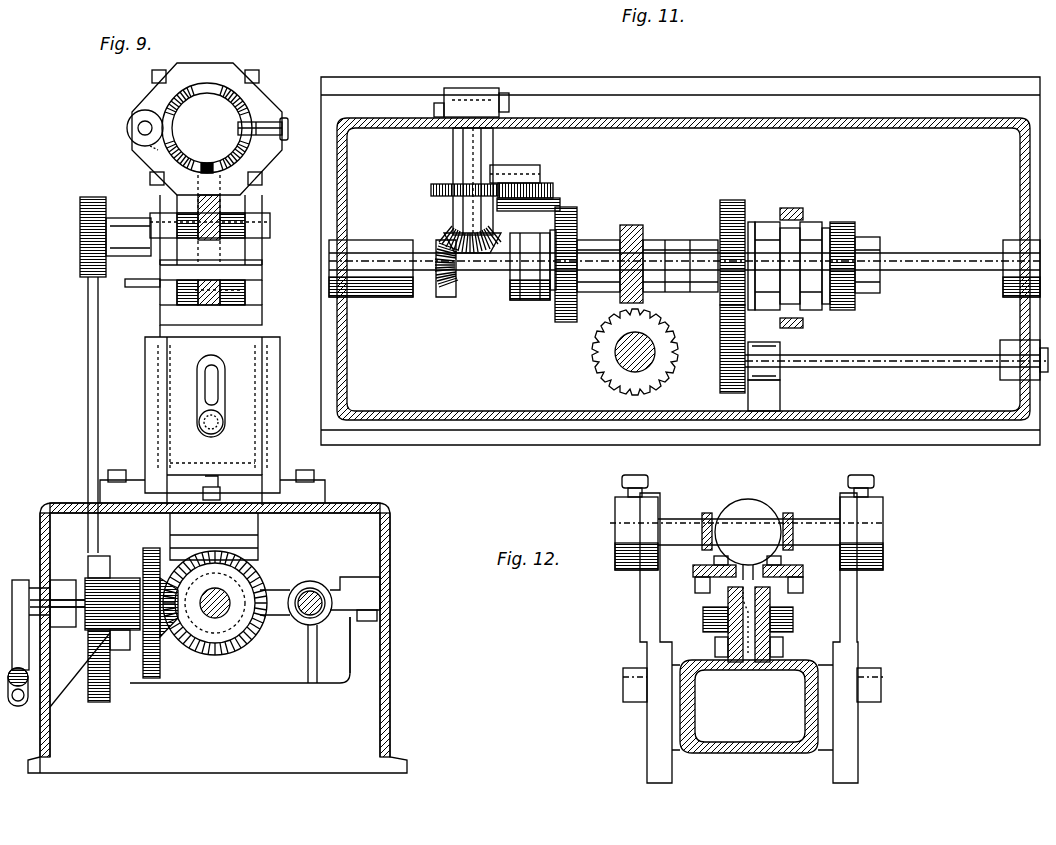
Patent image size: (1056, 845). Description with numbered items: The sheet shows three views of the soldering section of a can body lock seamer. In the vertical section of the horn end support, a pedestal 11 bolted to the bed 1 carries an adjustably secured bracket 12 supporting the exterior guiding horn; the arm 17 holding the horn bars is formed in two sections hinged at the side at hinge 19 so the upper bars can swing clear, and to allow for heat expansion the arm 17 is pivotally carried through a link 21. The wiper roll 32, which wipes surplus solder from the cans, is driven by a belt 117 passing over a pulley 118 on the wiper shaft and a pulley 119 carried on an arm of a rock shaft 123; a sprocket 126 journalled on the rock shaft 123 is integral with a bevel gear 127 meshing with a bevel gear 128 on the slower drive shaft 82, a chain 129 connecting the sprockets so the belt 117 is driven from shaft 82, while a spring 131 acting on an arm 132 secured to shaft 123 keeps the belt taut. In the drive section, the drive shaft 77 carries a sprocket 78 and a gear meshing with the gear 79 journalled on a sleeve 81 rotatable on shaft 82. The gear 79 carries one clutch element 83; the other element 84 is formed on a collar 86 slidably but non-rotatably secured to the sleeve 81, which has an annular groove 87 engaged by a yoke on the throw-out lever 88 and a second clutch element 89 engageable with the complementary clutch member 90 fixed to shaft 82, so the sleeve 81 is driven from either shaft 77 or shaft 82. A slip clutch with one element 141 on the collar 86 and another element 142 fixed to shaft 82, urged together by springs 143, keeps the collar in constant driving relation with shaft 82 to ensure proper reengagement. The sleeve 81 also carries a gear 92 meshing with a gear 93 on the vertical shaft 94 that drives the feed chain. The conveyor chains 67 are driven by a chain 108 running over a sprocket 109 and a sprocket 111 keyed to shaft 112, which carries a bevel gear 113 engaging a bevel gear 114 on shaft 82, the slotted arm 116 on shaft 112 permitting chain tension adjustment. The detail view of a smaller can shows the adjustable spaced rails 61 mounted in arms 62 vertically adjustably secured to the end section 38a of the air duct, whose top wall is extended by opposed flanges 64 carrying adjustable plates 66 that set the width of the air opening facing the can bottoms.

In FIG. 9, the frame or bed 1 is at (370, 504).
In FIG. 9, the pedestal 11 is at (270, 415).
In FIG. 9, the bracket 12 is at (262, 312).
In FIG. 9, the arm 17 is at (218, 62).
In FIG. 9, the hinge 19 is at (138, 132).
In FIG. 9, the link 21 is at (262, 232).
In FIG. 9, the wiper roll 32 is at (225, 218).
In FIG. 9, the belt 117 is at (88, 362).
In FIG. 9, the pulley 118 is at (80, 246).
In FIG. 9, the pulley 119 is at (110, 578).
In FIG. 9, the rock shaft 123 is at (60, 600).
In FIG. 9, the sprocket 126 is at (152, 678).
In FIG. 9, the bevel gear 127 is at (172, 640).
In FIG. 9, the bevel gear 128 is at (222, 660).
In FIG. 9, the chain 129 is at (148, 668).
In FIG. 9, the spring 131 is at (16, 708).
In FIG. 9, the arm 132 is at (85, 635).
In FIG. 9, the drive shaft 77 is at (300, 622).
In FIG. 11, the drive shaft 77 is at (903, 356).
In FIG. 9, the second drive shaft 82 is at (236, 622).
In FIG. 11, the second drive shaft 82 is at (928, 255).
In FIG. 11, the slotted arm 116 is at (505, 103).
In FIG. 11, the shaft 112 is at (465, 141).
In FIG. 11, the sprocket 111 is at (440, 184).
In FIG. 11, the chain 108 is at (505, 183).
In FIG. 11, the sprocket 109 is at (545, 182).
In FIG. 11, the conveyor chains 67 is at (560, 201).
In FIG. 12, the conveyor chains 67 is at (700, 566).
In FIG. 11, the bevel gear 113 is at (462, 235).
In FIG. 11, the bevel gear 114 is at (447, 298).
In FIG. 11, the springs 143 is at (552, 303).
In FIG. 11, the slip clutch element 141 is at (570, 212).
In FIG. 11, the slip clutch element 142 is at (552, 232).
In FIG. 11, the sleeve 81 is at (592, 240).
In FIG. 11, the gear 92 is at (632, 225).
In FIG. 11, the gear 79 is at (730, 200).
In FIG. 11, the sprocket 78 is at (720, 368).
In FIG. 11, the clutch element 83 is at (751, 222).
In FIG. 11, the clutch element 84 is at (768, 222).
In FIG. 11, the collar 86 is at (788, 228).
In FIG. 11, the throw-out lever 88 is at (795, 208).
In FIG. 11, the annular groove 87 is at (812, 222).
In FIG. 11, the clutch element 89 is at (826, 228).
In FIG. 11, the clutch member 90 is at (842, 222).
In FIG. 11, the gear 93 is at (592, 352).
In FIG. 11, the vertical shaft 94 is at (628, 358).
In FIG. 12, the rails 61 is at (709, 513).
In FIG. 12, the arms 62 is at (640, 600).
In FIG. 12, the flanges 64 is at (747, 665).
In FIG. 12, the plates 66 is at (746, 563).
In FIG. 12, the duct end section 38a is at (790, 753).